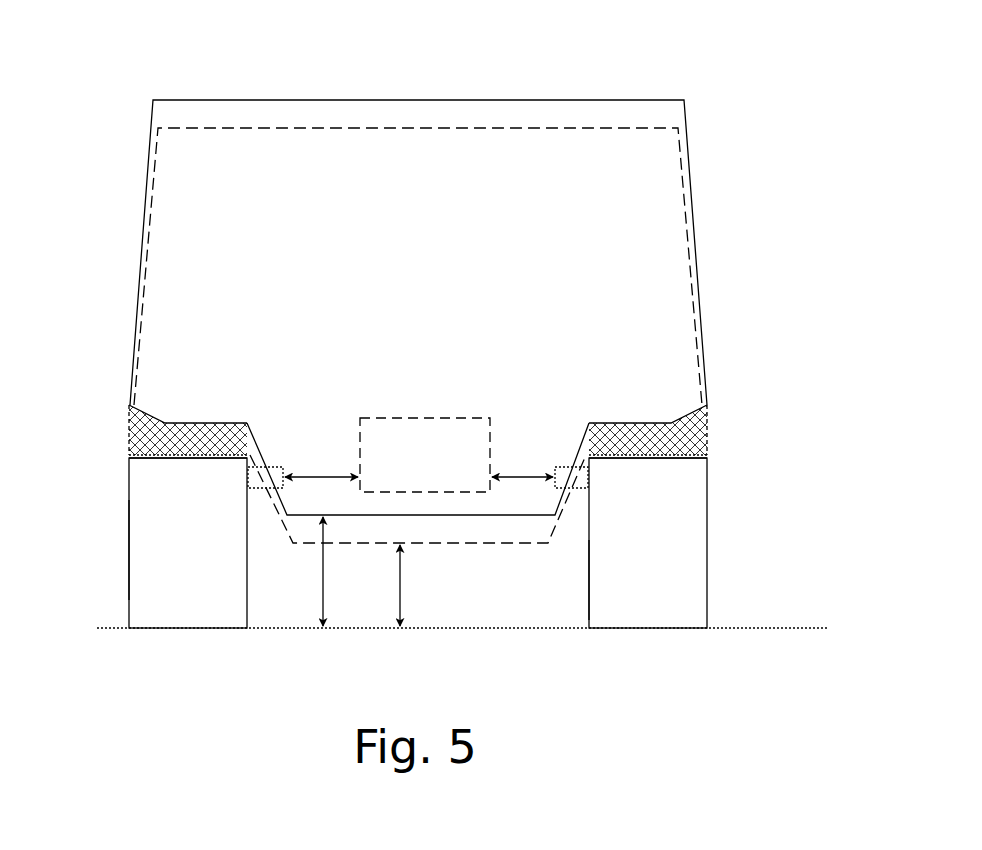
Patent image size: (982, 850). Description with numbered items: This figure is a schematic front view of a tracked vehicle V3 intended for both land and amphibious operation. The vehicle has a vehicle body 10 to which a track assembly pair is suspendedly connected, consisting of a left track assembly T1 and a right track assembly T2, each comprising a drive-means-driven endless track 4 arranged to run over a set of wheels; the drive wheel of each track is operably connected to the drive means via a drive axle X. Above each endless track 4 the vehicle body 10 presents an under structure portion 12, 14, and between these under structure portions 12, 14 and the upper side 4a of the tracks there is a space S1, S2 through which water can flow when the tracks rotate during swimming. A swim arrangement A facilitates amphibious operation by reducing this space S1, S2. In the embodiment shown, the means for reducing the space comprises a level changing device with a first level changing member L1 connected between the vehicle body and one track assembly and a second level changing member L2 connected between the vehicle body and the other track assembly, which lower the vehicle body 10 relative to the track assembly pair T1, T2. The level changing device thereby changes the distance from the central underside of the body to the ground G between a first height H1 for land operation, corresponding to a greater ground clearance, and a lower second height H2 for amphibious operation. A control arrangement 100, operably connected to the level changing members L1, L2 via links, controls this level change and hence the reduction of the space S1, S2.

The vehicle body 10 is at (146, 171).
The tracked vehicle V3 is at (510, 57).
The endless track 4 is at (173, 631).
The upper side of the track 4a is at (227, 452).
The under structure portion 12 is at (638, 458).
The under structure portion 14 is at (153, 448).
The space S1 is at (700, 425).
The space S2 is at (143, 434).
The drive axle X is at (584, 517).
The control arrangement 100 is at (425, 455).
The swim arrangement A is at (428, 416).
The first level changing member L1 is at (562, 462).
The second level changing member L2 is at (278, 462).
The first height H1 is at (306, 571).
The second height H2 is at (382, 585).
The left track assembly T1 is at (587, 592).
The right track assembly T2 is at (127, 545).
The ground G is at (772, 628).